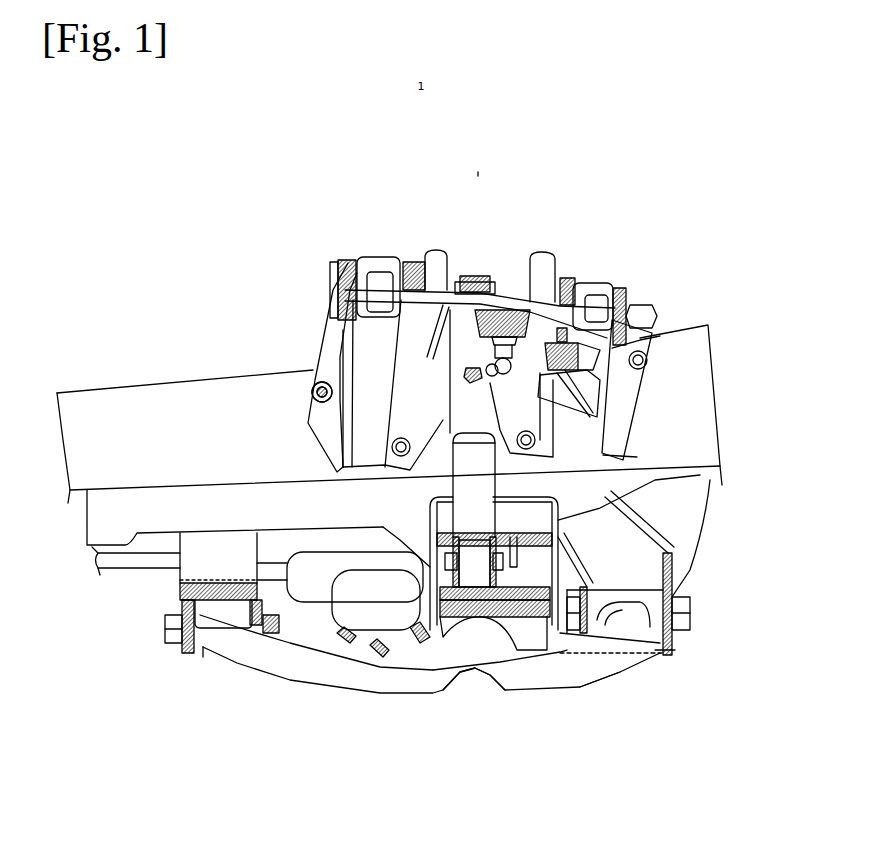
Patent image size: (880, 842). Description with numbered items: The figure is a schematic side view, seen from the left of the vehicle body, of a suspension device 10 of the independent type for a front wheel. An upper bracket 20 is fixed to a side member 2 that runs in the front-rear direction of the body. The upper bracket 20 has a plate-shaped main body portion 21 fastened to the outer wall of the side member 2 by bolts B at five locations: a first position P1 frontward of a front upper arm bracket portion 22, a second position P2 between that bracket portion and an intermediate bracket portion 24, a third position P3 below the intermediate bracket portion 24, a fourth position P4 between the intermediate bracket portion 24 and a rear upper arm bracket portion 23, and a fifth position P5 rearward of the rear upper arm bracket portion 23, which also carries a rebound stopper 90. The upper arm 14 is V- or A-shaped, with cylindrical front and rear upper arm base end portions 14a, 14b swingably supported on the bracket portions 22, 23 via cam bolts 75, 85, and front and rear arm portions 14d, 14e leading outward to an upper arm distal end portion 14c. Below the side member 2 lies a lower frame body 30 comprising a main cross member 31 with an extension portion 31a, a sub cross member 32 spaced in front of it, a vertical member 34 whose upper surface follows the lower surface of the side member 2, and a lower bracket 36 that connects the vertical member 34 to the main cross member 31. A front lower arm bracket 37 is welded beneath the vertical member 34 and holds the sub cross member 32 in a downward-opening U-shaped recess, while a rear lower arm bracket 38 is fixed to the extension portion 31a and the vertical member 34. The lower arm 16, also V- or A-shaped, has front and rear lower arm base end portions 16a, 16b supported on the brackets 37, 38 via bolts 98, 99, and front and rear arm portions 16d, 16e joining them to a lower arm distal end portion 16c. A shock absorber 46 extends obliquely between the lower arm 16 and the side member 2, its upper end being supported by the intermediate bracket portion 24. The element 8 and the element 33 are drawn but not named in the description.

The side member 2 is at (150, 392).
The bolt 8 is at (312, 402).
The suspension device 10 is at (478, 172).
The upper arm 14 is at (440, 265).
The front upper arm base end portion 14a is at (383, 258).
The rear upper arm base end portion 14b is at (600, 278).
The upper arm distal end portion 14c is at (503, 286).
The front arm portion 14d is at (420, 262).
The rear arm portion 14e is at (566, 282).
The lower arm 16 is at (423, 695).
The front lower arm base end portion 16a is at (205, 652).
The rear lower arm base end portion 16b is at (657, 660).
The lower arm distal end portion 16c is at (470, 668).
The front arm portion 16d is at (355, 690).
The rear arm portion 16e is at (620, 682).
The upper bracket 20 is at (320, 318).
The main body portion 21 is at (310, 350).
The front upper arm bracket portion 22 is at (345, 300).
The rear upper arm bracket portion 23 is at (628, 432).
The intermediate bracket portion 24 is at (478, 270).
The lower frame body 30 is at (113, 628).
The main cross member 31 is at (548, 675).
The extension portion 31a is at (570, 660).
The sub cross member 32 is at (177, 583).
The stabilizer link 33 is at (612, 656).
The vertical member 34 is at (103, 575).
The lower bracket 36 is at (582, 518).
The front lower arm bracket 37 is at (215, 548).
The rear lower arm bracket 38 is at (680, 650).
The shock absorber 46 is at (440, 484).
The cam bolt 75 is at (330, 268).
The cam bolt 85 is at (657, 305).
The rebound stopper 90 is at (640, 342).
The bolt 98 is at (163, 633).
The bolt 99 is at (690, 600).
The first position P1 is at (322, 382).
The second position P2 is at (410, 438).
The third position P3 is at (472, 388).
The fourth position P4 is at (531, 431).
The fifth position P5 is at (635, 376).